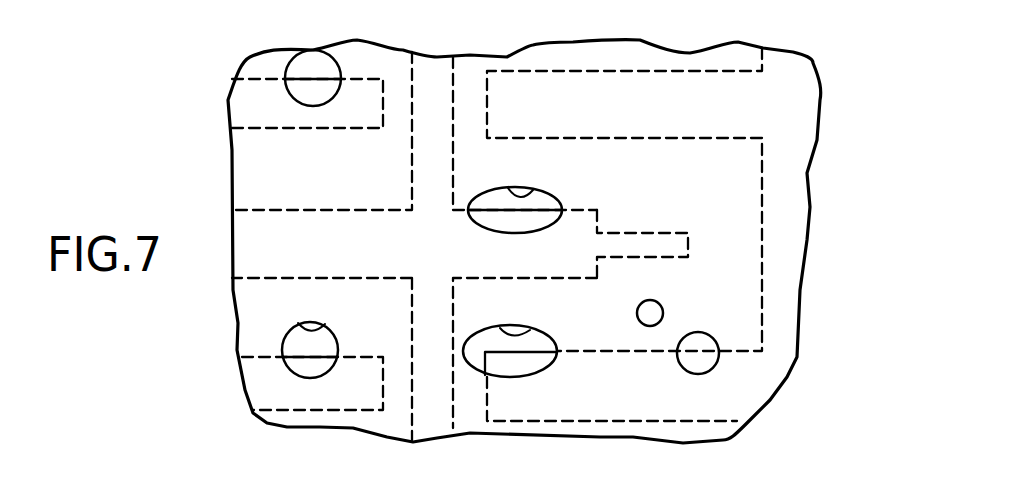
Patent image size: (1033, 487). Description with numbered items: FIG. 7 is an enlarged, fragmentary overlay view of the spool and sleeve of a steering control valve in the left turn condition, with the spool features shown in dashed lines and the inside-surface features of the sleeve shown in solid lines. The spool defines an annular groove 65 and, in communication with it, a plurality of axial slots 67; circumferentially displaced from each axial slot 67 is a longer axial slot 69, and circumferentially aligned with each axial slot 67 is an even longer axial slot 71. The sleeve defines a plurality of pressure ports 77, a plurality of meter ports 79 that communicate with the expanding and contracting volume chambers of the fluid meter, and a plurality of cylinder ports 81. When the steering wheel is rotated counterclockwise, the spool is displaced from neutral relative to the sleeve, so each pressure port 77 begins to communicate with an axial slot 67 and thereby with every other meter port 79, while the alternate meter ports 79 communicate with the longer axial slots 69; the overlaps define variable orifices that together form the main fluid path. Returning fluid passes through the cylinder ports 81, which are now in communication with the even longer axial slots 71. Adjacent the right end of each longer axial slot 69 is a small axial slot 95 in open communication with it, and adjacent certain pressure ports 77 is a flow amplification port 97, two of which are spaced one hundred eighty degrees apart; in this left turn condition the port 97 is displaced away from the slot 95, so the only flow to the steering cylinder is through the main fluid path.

The annular groove 65 is at (782, 172).
The axial slot 67 is at (620, 88).
The longer axial slot 69 is at (368, 222).
The even longer axial slot 71 is at (253, 107).
The pressure port 77 is at (700, 343).
The meter port 79 is at (530, 193).
The cylinder port 81 is at (328, 65).
The small axial slot 95 is at (645, 240).
The flow amplification port 97 is at (650, 310).